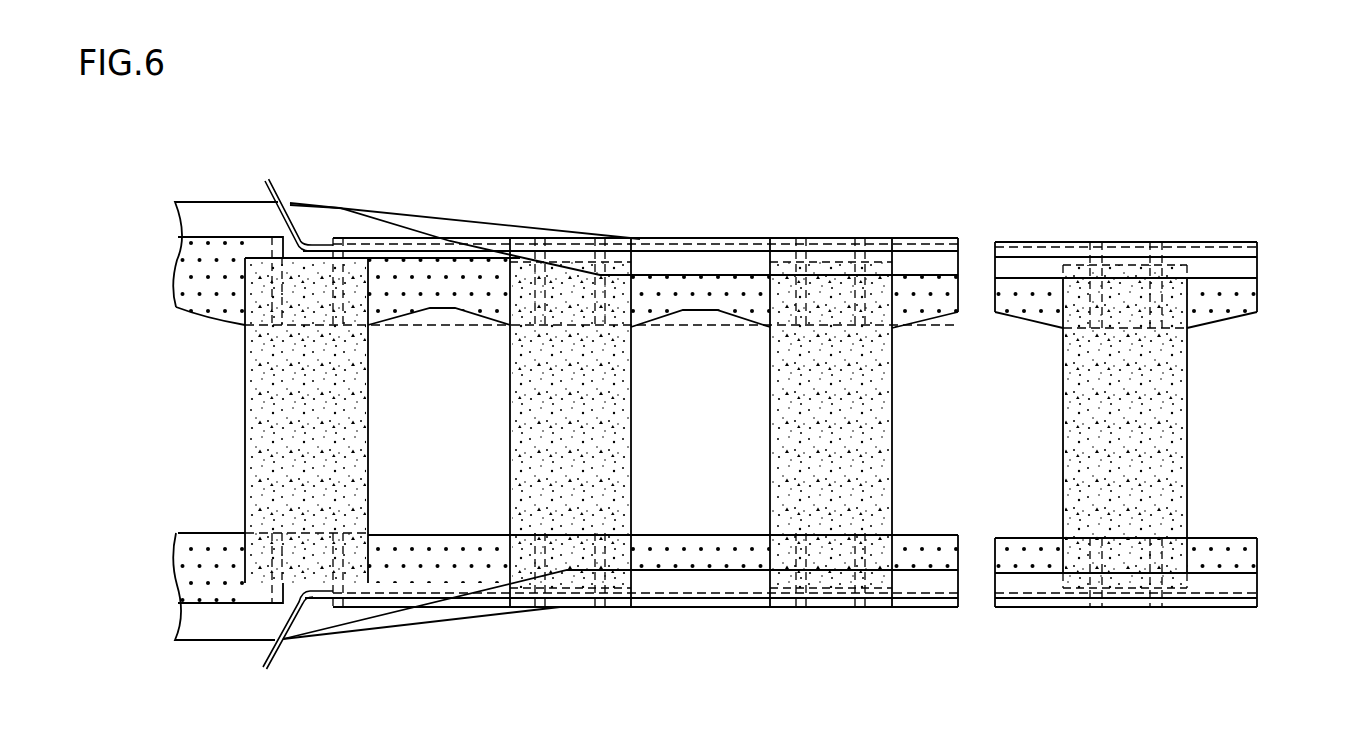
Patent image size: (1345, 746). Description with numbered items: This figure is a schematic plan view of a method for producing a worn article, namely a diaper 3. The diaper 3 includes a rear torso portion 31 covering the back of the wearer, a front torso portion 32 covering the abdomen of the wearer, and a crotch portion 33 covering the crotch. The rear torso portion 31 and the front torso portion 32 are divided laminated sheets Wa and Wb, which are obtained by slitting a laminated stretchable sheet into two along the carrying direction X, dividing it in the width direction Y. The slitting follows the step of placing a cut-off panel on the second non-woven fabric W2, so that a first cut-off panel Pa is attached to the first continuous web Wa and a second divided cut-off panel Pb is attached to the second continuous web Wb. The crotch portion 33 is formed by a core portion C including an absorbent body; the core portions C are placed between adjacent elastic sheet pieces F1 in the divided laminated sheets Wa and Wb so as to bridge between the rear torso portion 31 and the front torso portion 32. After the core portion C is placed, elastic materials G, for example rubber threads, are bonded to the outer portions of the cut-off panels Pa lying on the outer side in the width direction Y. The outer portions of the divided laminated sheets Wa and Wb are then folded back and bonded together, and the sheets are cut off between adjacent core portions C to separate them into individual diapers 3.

The diaper 3 is at (1159, 335).
The rear torso portion 31 is at (1247, 288).
The front torso portion 32 is at (1243, 562).
The crotch portion 33 is at (1177, 435).
The divided laminated sheet Wa is at (210, 212).
The divided laminated sheet Wb is at (215, 630).
The second non-woven fabric W2 is at (175, 218).
The first cut-off panel Pa is at (183, 265).
The second divided cut-off panel Pb is at (187, 567).
The elastic sheet piece F1 is at (173, 295).
The core portion C is at (260, 412).
The elastic material G is at (278, 182).
The carrying direction X is at (735, 131).
The width direction Y is at (105, 340).